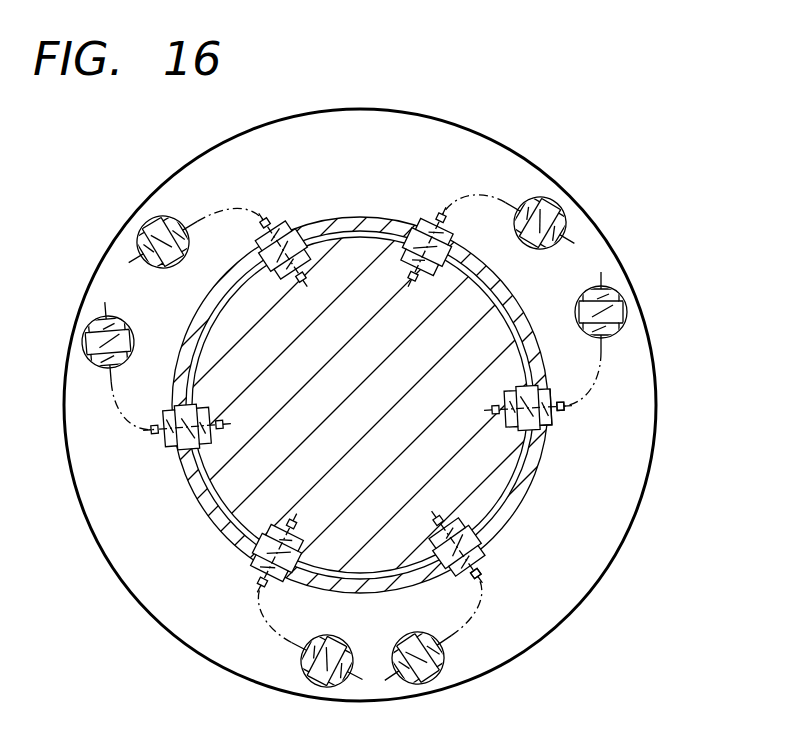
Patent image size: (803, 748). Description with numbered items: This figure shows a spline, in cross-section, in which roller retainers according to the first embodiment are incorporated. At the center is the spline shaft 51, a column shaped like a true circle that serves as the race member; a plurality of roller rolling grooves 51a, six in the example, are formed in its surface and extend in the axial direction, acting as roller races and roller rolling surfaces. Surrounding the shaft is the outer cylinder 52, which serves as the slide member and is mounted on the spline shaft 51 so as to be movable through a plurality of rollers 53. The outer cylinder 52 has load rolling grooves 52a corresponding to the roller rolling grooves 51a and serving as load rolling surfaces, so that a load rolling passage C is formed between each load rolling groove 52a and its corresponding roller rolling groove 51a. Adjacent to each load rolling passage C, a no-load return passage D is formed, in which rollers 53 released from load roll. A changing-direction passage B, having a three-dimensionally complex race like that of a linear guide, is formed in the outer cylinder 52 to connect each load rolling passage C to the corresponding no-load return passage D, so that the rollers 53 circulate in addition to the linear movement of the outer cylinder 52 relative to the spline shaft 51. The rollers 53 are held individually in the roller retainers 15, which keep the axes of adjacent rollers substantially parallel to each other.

The spline shaft 51 is at (470, 300).
The roller rolling groove 51a is at (547, 423).
The outer cylinder 52 is at (637, 423).
The load rolling groove 52a is at (545, 396).
The roller 53 is at (480, 578).
The roller retainer 15 is at (482, 555).
The changing-direction passage B is at (602, 355).
The load rolling passage C is at (548, 418).
The no-load return passage D is at (618, 297).